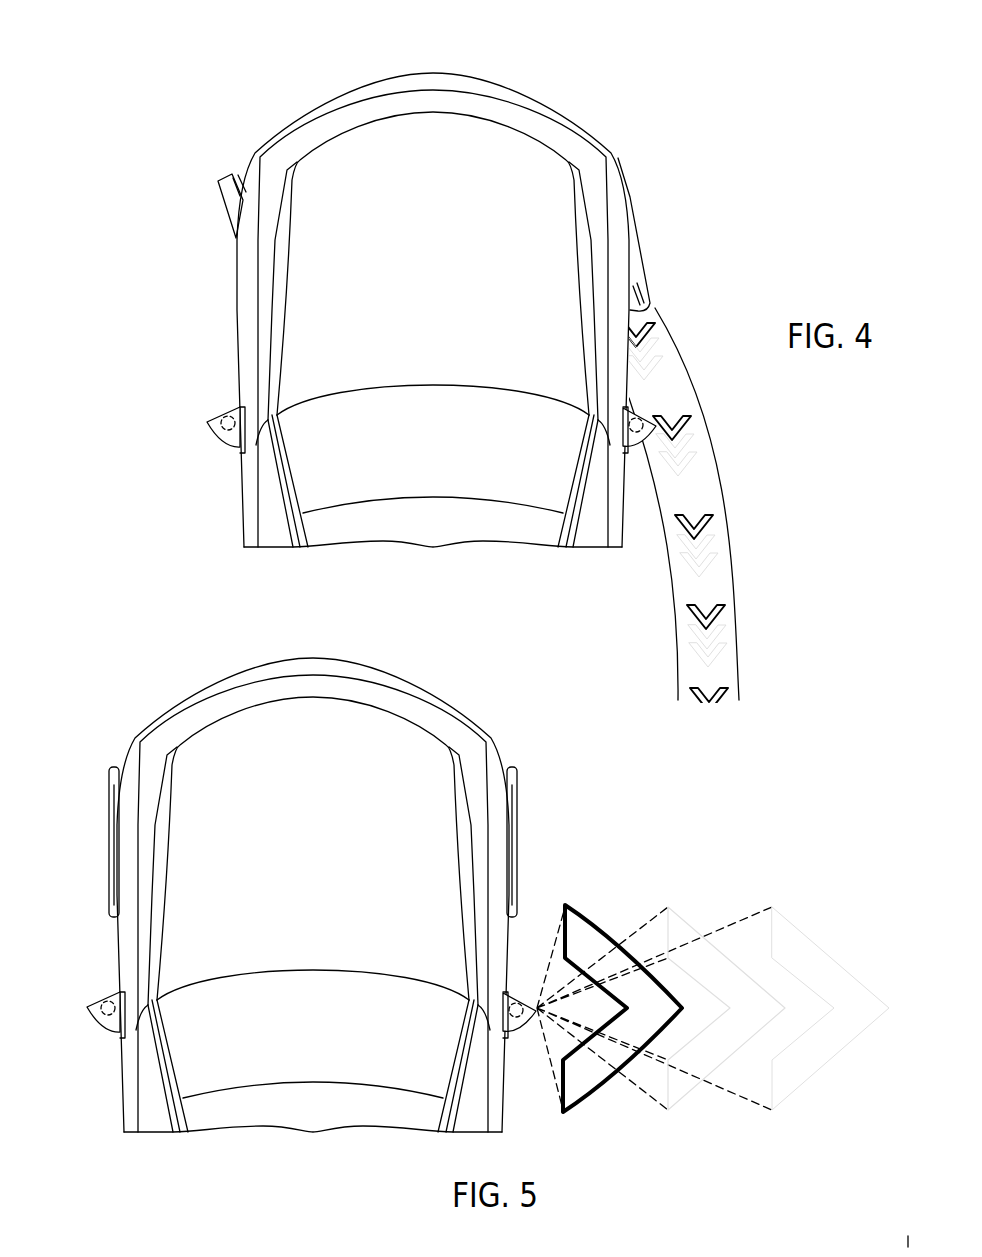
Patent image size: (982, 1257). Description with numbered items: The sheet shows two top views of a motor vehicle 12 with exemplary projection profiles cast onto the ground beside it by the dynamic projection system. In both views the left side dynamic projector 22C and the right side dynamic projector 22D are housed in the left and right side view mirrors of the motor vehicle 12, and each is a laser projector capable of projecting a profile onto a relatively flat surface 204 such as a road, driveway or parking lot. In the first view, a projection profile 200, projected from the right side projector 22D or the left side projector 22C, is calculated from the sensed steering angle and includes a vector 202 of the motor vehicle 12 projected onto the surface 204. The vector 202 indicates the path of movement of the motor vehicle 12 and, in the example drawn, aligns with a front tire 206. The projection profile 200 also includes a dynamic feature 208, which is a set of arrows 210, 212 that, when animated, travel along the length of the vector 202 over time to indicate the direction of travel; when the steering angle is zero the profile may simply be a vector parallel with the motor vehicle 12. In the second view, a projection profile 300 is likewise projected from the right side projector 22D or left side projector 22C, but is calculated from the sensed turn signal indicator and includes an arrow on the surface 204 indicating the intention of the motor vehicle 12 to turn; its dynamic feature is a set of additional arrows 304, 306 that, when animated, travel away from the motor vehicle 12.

In FIG. 4, the motor vehicle 12 is at (528, 95).
In FIG. 5, the motor vehicle 12 is at (407, 681).
In FIG. 4, the left side dynamic projector 22C is at (222, 412).
In FIG. 5, the left side dynamic projector 22C is at (107, 997).
In FIG. 4, the right side dynamic projector 22D is at (627, 431).
In FIG. 5, the right side dynamic projector 22D is at (507, 1015).
In FIG. 4, the projection profile 200 is at (715, 485).
In FIG. 4, the vector 202 is at (723, 490).
In FIG. 4, the relatively flat surface 204 is at (651, 193).
In FIG. 5, the relatively flat surface 204 is at (583, 1133).
In FIG. 4, the front tire 206 is at (647, 281).
In FIG. 4, the dynamic feature 208 is at (684, 421).
In FIG. 4, the arrow 210 is at (713, 536).
In FIG. 4, the arrow 212 is at (719, 628).
In FIG. 5, the projection profile 300 is at (713, 992).
In FIG. 5, the additional arrow 304 is at (681, 920).
In FIG. 5, the additional arrow 306 is at (791, 928).